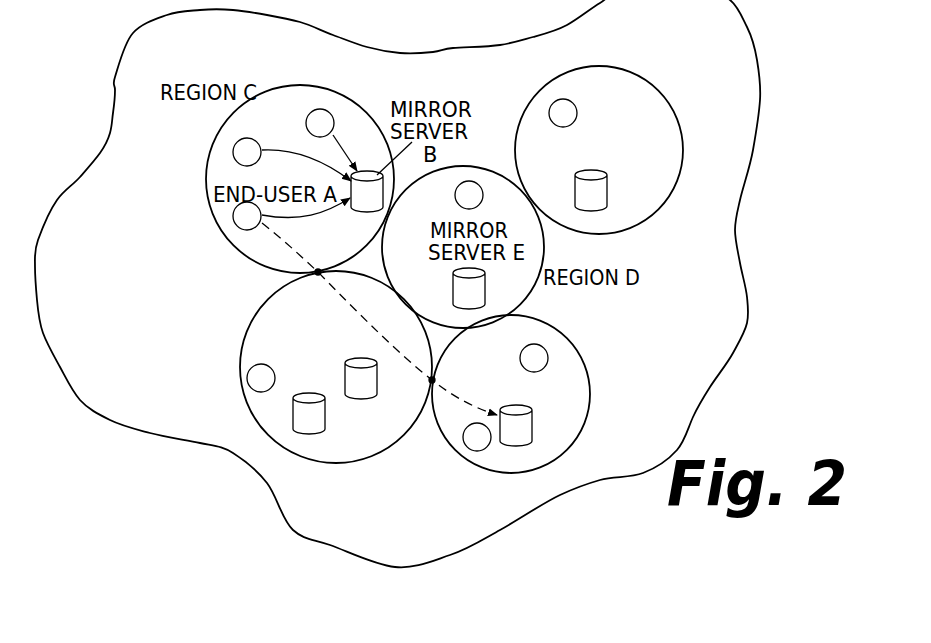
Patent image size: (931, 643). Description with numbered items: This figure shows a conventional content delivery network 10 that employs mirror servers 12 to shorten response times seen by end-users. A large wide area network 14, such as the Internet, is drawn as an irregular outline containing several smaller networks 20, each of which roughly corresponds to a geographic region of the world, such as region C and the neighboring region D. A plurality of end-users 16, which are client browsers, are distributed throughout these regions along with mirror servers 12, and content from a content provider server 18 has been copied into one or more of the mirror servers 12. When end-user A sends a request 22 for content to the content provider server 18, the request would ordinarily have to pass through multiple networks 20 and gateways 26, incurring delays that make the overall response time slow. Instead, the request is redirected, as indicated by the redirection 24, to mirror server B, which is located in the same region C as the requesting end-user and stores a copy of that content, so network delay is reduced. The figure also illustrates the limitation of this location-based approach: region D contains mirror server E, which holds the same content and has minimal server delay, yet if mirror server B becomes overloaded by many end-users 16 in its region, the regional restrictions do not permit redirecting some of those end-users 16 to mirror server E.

The content delivery network 10 is at (76, 416).
The mirror server 12 is at (450, 302).
The wide area network 14 is at (414, 283).
The end-user 16 is at (405, 275).
The content provider server 18 is at (516, 425).
The network 20 is at (448, 269).
The request 22 is at (322, 315).
The redirection 24 is at (309, 186).
The gateway 26 is at (379, 319).